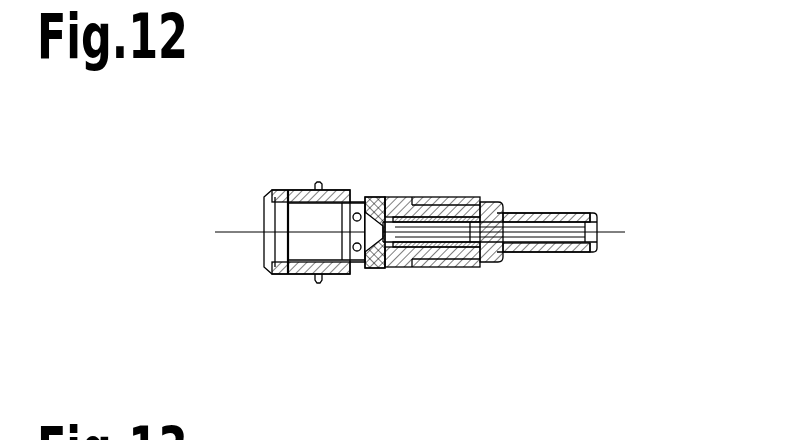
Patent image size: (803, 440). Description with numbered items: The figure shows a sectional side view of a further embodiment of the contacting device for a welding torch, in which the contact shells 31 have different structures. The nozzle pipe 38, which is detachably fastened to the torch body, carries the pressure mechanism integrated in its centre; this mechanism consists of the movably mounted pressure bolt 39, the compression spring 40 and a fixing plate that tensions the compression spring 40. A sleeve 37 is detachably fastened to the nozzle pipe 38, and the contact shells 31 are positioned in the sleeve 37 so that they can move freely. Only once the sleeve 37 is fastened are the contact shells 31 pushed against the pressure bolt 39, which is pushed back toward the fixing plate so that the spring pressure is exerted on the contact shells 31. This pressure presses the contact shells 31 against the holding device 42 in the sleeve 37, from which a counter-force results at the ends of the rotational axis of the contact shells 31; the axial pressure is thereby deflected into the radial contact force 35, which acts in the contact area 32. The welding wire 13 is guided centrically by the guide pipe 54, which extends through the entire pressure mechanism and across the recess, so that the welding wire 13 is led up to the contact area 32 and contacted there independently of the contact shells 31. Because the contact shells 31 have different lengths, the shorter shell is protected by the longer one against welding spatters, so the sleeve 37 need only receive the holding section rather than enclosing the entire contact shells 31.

The welding wire 13 is at (240, 230).
The contact shells 31 is at (518, 213).
The contact area 32 is at (592, 218).
The contact force 35 is at (578, 197).
The sleeve 37 is at (447, 197).
The nozzle pipe 38 is at (392, 197).
The pressure bolt 39 is at (458, 267).
The compression spring 40 is at (400, 267).
The holding device 42 is at (492, 198).
The guide pipe 54 is at (503, 262).